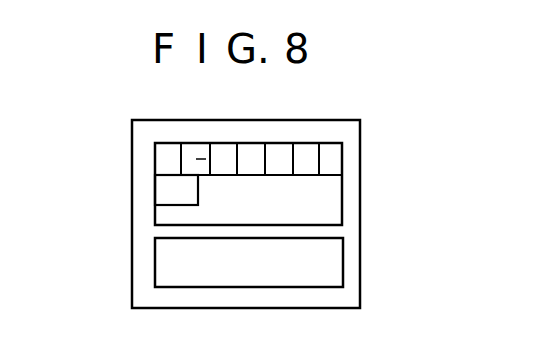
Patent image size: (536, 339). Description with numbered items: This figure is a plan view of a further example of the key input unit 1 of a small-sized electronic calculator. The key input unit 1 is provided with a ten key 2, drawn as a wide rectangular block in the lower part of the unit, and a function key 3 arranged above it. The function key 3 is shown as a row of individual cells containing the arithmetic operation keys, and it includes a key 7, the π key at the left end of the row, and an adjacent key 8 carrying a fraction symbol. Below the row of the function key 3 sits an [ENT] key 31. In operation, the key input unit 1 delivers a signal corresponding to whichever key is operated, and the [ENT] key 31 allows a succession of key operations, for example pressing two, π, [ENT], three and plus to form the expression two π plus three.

The key input unit 1 is at (366, 300).
The ten key 2 is at (343, 266).
The function key 3 is at (343, 201).
The key 7 is at (165, 142).
The fraction key 8 is at (188, 142).
The [ENT] key 31 is at (157, 197).